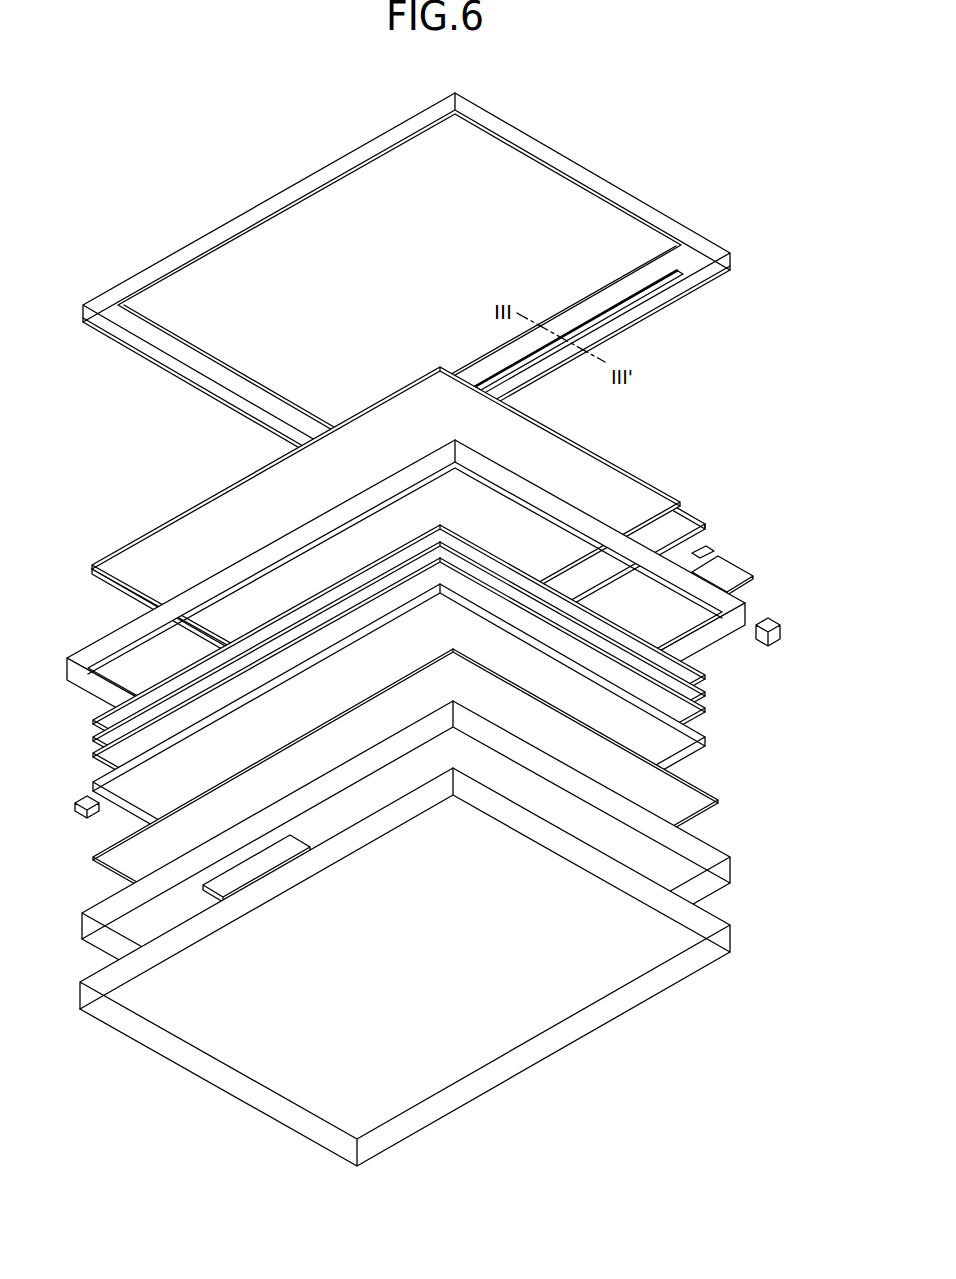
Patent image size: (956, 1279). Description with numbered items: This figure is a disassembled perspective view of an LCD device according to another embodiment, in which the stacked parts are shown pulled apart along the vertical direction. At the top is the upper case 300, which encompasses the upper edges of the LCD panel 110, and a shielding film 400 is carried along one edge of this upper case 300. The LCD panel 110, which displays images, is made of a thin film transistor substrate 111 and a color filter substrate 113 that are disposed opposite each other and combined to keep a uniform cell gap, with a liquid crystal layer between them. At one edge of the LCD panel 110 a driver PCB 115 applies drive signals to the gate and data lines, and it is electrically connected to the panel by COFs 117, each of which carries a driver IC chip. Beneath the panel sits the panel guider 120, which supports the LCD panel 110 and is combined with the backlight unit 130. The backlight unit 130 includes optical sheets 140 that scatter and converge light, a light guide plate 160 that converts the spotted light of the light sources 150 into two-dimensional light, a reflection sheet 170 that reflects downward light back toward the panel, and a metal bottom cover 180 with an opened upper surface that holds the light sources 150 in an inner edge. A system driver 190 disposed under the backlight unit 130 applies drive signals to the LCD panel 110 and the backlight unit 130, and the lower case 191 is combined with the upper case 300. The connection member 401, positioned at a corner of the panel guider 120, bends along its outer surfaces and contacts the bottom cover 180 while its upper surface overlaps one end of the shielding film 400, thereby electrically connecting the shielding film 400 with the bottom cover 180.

The LCD panel 110 is at (440, 547).
The thin film transistor substrate 111 is at (657, 488).
The color filter substrate 113 is at (699, 512).
The driver PCB 115 is at (740, 544).
The COF 117 is at (712, 558).
The panel guider 120 is at (750, 602).
The backlight unit 130 is at (461, 810).
The optical sheets 140 is at (712, 668).
The light sources 150 is at (79, 803).
The light guide plate 160 is at (707, 737).
The reflection sheet 170 is at (720, 802).
The bottom cover 180 is at (434, 898).
The system driver 190 is at (257, 870).
The lower case 191 is at (732, 933).
The upper case 300 is at (742, 260).
The shielding film 400 is at (640, 298).
The connection member 401 is at (782, 630).